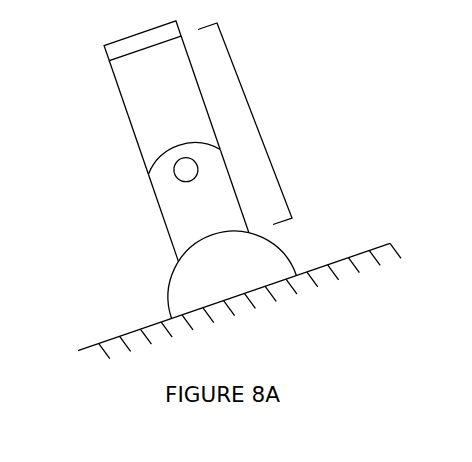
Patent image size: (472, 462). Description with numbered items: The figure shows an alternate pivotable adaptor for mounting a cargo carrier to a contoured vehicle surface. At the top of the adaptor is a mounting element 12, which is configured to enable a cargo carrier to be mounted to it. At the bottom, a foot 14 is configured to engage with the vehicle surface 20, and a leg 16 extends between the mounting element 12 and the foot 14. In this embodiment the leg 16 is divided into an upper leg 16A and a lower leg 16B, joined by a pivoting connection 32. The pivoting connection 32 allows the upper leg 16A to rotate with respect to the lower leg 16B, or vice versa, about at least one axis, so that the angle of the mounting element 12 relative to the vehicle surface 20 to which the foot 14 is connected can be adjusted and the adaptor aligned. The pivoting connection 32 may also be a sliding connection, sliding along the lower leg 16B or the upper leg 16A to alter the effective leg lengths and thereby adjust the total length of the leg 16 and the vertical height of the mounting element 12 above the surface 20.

The mounting element 12 is at (110, 51).
The foot 14 is at (185, 295).
The leg 16 is at (255, 113).
The upper leg 16A is at (137, 118).
The lower leg 16B is at (168, 225).
The surface 20 is at (239, 300).
The pivoting connection 32 is at (174, 172).